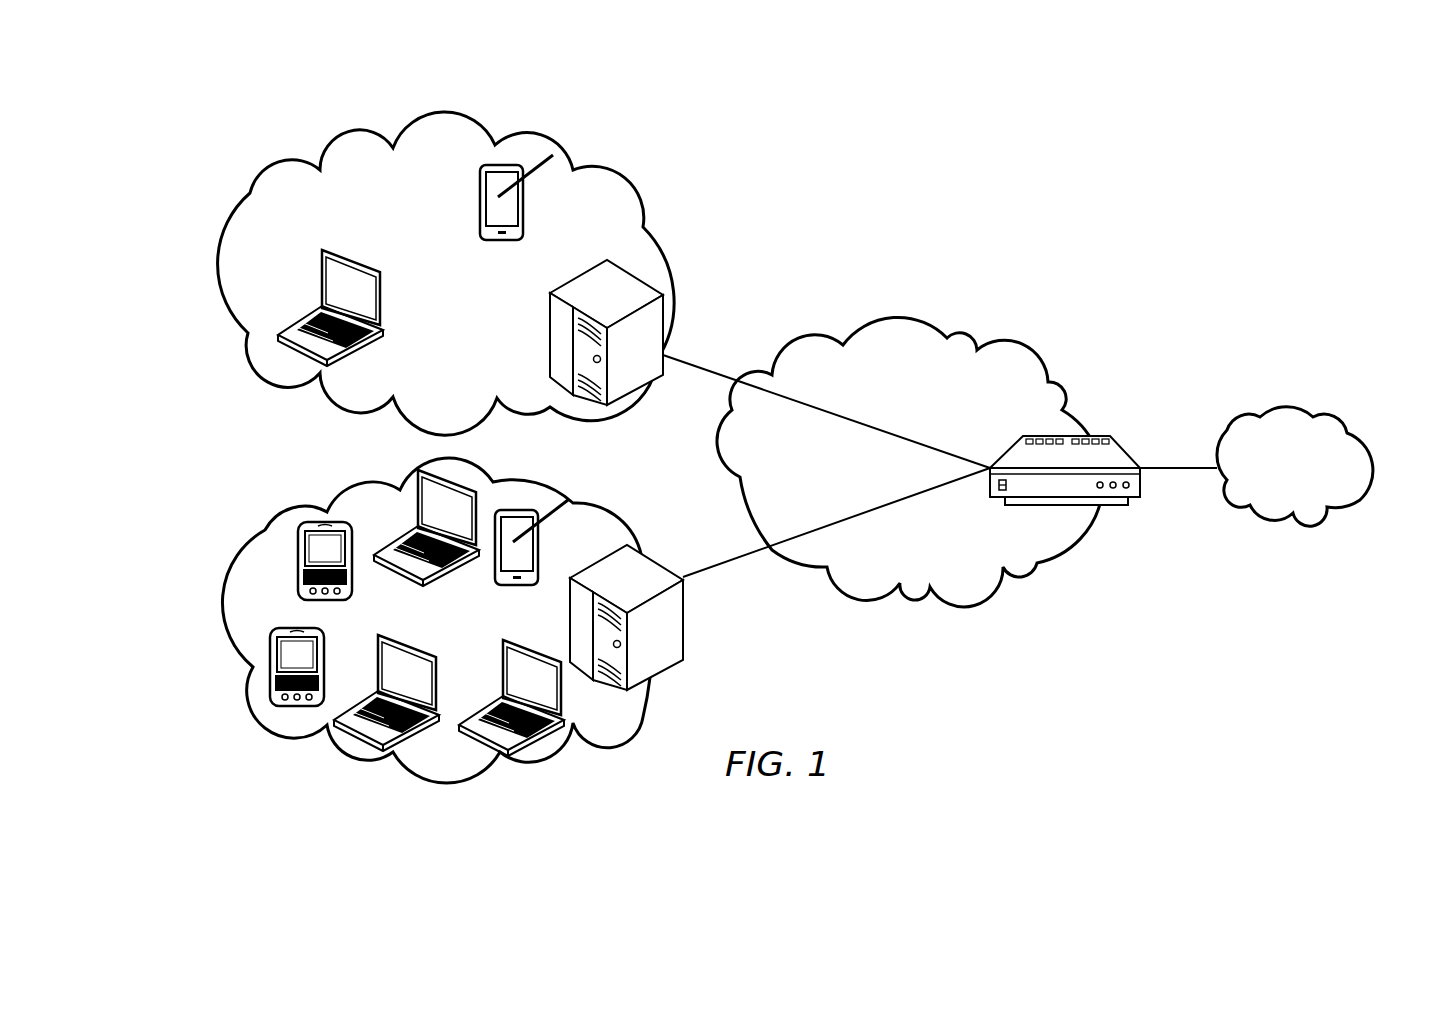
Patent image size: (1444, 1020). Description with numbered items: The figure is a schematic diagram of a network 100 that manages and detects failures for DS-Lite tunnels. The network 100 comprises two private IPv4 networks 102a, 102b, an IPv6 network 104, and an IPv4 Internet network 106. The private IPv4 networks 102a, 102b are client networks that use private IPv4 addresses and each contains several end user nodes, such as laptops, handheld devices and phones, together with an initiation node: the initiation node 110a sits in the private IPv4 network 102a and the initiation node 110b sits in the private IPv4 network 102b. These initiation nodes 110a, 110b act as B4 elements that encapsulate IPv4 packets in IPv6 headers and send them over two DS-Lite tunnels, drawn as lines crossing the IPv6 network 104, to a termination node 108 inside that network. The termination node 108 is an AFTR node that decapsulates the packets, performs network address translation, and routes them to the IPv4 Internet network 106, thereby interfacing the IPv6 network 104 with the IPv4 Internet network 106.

The network 100 is at (284, 103).
The private IPv4 network 102a is at (218, 270).
The private IPv4 network 102b is at (223, 618).
The IPv6 network 104 is at (1062, 388).
The IPv4 Internet network 106 is at (1371, 468).
The termination node 108 is at (1114, 505).
The initiation node 110a is at (548, 314).
The initiation node 110b is at (566, 617).